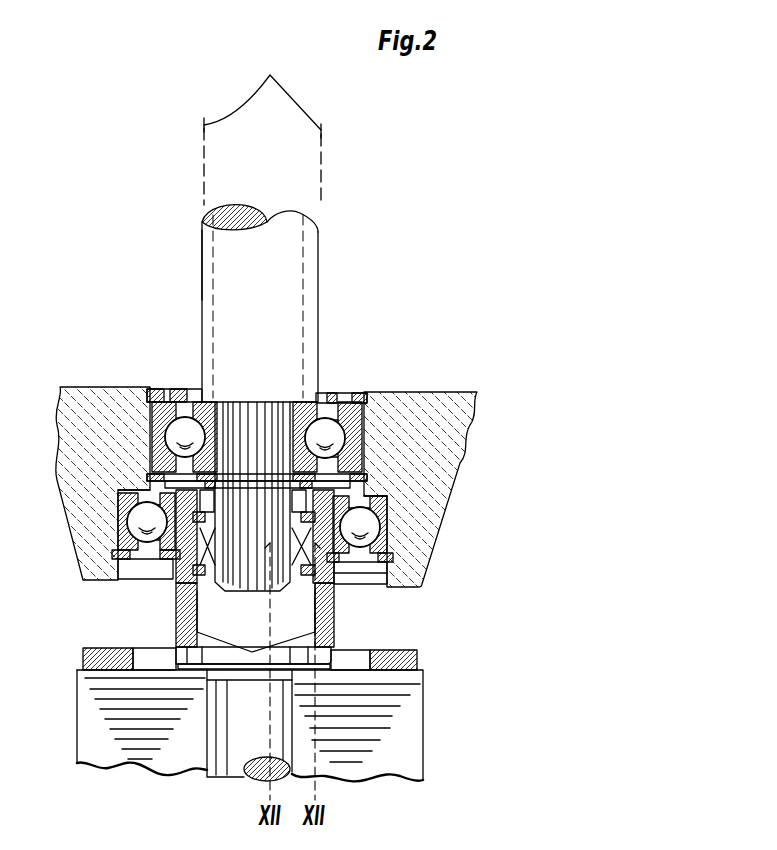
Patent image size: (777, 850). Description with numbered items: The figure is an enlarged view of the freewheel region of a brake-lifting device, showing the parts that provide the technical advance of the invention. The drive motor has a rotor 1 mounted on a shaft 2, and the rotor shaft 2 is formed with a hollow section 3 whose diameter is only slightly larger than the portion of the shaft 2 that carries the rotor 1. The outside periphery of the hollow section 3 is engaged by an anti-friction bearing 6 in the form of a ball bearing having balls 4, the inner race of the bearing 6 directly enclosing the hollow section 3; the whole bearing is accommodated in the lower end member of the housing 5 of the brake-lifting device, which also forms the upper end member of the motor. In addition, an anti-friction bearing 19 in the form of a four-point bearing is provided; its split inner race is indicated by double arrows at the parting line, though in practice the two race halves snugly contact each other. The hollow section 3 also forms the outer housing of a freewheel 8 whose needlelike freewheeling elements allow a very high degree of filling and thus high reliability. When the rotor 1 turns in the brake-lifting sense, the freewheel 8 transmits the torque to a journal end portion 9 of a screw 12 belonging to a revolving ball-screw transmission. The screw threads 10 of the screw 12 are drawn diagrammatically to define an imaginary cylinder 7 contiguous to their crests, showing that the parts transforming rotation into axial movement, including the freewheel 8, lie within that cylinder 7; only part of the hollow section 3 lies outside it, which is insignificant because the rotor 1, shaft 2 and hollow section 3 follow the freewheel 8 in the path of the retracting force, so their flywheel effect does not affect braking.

The rotor 1 is at (414, 703).
The shaft 2 is at (243, 752).
The hollow section 3 is at (336, 612).
The balls 4 is at (120, 530).
The bearing housing 5 is at (114, 392).
The anti-friction bearing 6 is at (120, 488).
The imaginary cylinder 7 is at (262, 123).
The freewheel 8 is at (200, 553).
The journal end portion 9 is at (250, 576).
The screw threads 10 is at (200, 250).
The screw 12 is at (292, 288).
The anti-friction bearing 19 is at (366, 398).